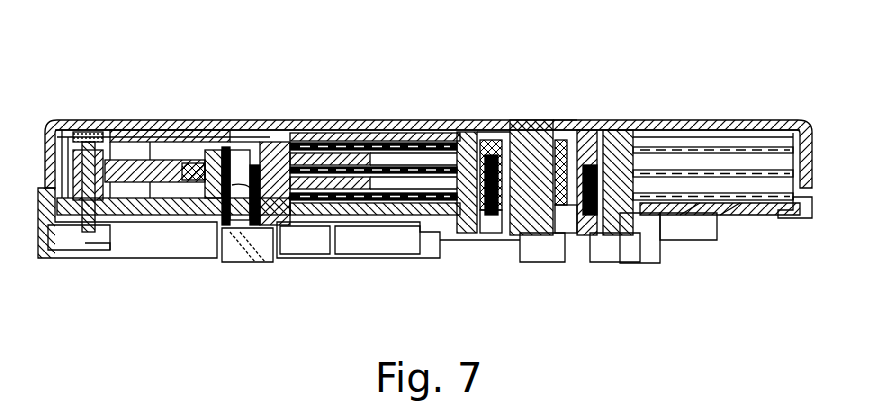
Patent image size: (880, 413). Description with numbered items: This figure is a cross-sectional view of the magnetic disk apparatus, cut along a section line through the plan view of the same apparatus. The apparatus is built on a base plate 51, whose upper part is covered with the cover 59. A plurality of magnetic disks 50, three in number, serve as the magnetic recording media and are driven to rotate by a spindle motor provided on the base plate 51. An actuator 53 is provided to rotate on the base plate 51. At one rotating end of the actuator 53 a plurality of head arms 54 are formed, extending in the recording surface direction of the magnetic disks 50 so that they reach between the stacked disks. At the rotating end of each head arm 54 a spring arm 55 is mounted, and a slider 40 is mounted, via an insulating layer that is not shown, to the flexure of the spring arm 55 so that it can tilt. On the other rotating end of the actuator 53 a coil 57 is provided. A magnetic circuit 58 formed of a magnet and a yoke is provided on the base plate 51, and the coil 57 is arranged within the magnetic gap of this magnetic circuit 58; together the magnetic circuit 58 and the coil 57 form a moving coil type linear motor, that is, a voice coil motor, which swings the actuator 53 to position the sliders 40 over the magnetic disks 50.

The magnetic circuit 58 is at (122, 114).
The coil 57 is at (146, 118).
The cover 59 is at (268, 118).
The head arm 54 is at (355, 122).
The spring arm 55 is at (416, 120).
The slider 40 is at (443, 118).
The magnetic disk 50 is at (650, 120).
The actuator 53 is at (310, 240).
The base plate 51 is at (345, 240).